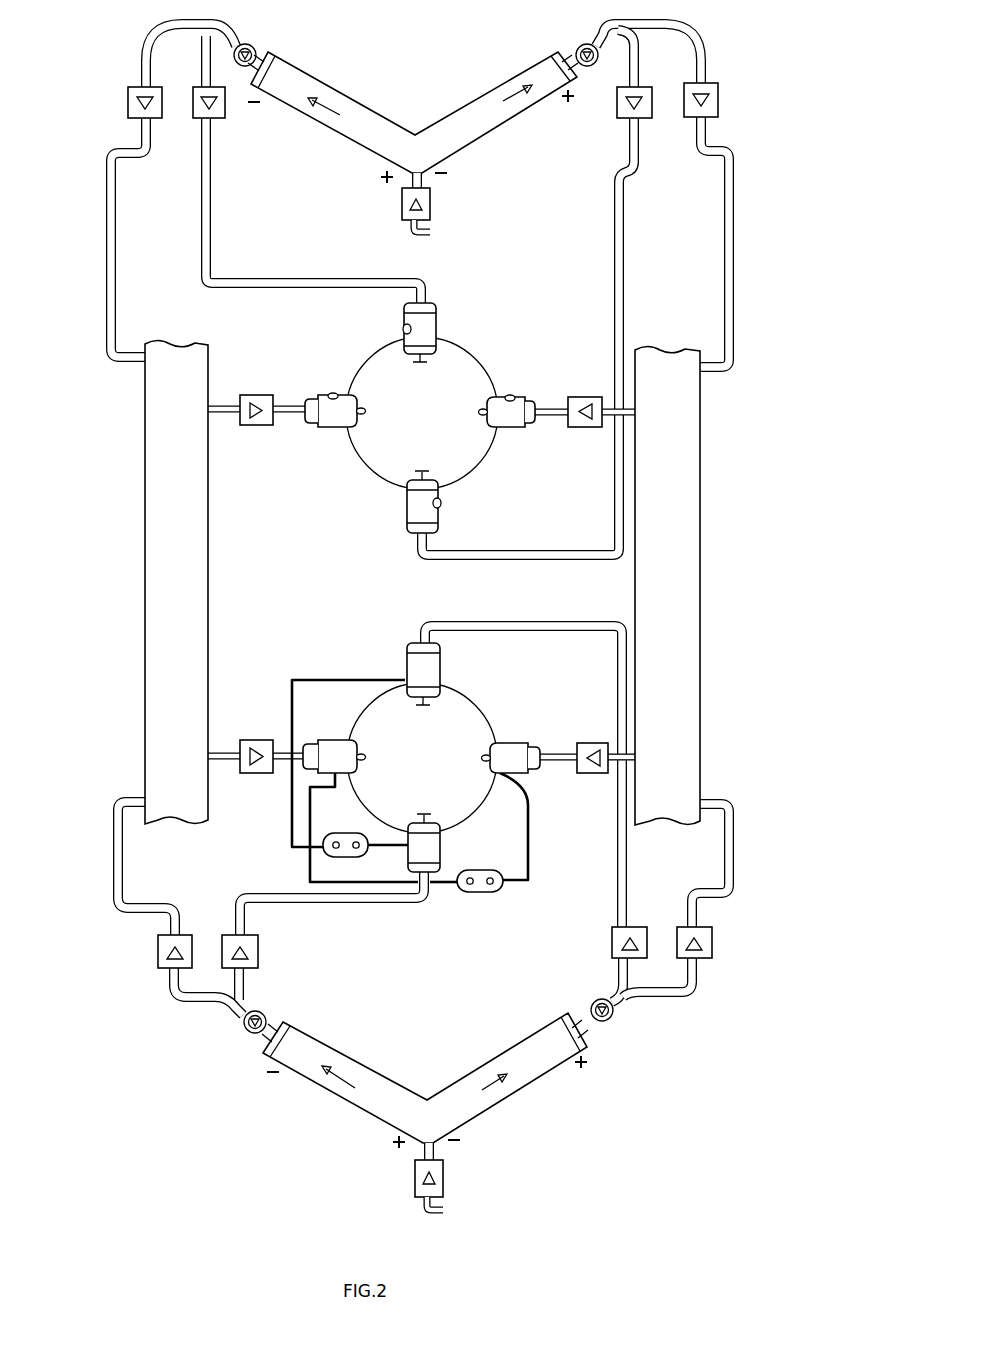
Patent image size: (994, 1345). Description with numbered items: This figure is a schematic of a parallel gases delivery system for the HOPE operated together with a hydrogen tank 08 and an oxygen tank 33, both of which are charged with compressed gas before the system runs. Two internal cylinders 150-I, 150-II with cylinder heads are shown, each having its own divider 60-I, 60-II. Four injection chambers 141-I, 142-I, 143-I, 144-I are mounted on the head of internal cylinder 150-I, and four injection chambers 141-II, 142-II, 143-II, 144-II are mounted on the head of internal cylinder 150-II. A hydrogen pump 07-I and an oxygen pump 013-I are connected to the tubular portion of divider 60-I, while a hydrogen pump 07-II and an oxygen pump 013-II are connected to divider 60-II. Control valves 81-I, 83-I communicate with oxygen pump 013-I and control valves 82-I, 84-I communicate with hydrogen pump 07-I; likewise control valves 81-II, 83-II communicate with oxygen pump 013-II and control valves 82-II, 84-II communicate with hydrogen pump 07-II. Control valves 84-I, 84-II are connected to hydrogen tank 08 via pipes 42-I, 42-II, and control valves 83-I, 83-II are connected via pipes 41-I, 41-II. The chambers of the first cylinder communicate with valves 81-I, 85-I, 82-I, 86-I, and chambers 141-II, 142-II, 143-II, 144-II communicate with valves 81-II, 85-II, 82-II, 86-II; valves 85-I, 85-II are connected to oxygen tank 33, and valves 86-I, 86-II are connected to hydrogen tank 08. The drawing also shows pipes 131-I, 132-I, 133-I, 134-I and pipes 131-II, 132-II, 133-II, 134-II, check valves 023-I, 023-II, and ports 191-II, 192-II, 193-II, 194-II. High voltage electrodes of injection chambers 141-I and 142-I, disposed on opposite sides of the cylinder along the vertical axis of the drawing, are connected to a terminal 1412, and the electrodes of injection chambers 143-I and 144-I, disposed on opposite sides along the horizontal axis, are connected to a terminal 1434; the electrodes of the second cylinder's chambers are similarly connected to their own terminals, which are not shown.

The oxygen pump 013-II is at (252, 43).
The hydrogen pump 07-II is at (573, 43).
The control valve 83-II is at (128, 103).
The control valve 81-II is at (225, 108).
The control valve 82-II is at (617, 110).
The control valve 84-II is at (718, 103).
The divider 60-II is at (462, 147).
The check valve 023-II is at (431, 204).
The pipe 41-II is at (111, 212).
The pipe 131-II is at (215, 224).
The pipe 132-II is at (615, 228).
The pipe 42-II is at (734, 266).
The port 191-II is at (406, 331).
The injection chamber 141-II is at (438, 330).
The pipe 133-II is at (228, 405).
The internal cylinder 150-II is at (488, 372).
The port 193-II is at (336, 385).
The port 194-II is at (512, 396).
The valve 85-II is at (260, 425).
The injection chamber 143-II is at (330, 427).
The injection chamber 144-II is at (512, 427).
The valve 86-II is at (586, 427).
The pipe 134-II is at (650, 400).
The injection chamber 142-II is at (407, 522).
The port 192-II is at (441, 503).
The injection chamber 142-I is at (403, 677).
The internal cylinder 150-I is at (470, 690).
The pipe 133-I is at (228, 752).
The injection chamber 143-I is at (333, 745).
The injection chamber 144-I is at (515, 745).
The oxygen tank 33 is at (145, 713).
The hydrogen tank 08 is at (700, 705).
The pipe 134-I is at (650, 748).
The valve 85-I is at (262, 773).
The valve 86-I is at (592, 773).
The injection chamber 141-I is at (440, 845).
The terminal 1412 is at (342, 857).
The terminal 1434 is at (460, 895).
The pipe 41-I is at (118, 855).
The pipe 132-I is at (626, 858).
The pipe 42-I is at (733, 862).
The pipe 131-I is at (345, 905).
The control valve 83-I is at (158, 950).
The control valve 81-I is at (258, 952).
The control valve 82-I is at (612, 944).
The control valve 84-I is at (712, 945).
The oxygen pump 013-I is at (243, 1030).
The hydrogen pump 07-I is at (604, 1025).
The divider 60-I is at (497, 1097).
The check valve 023-I is at (443, 1180).